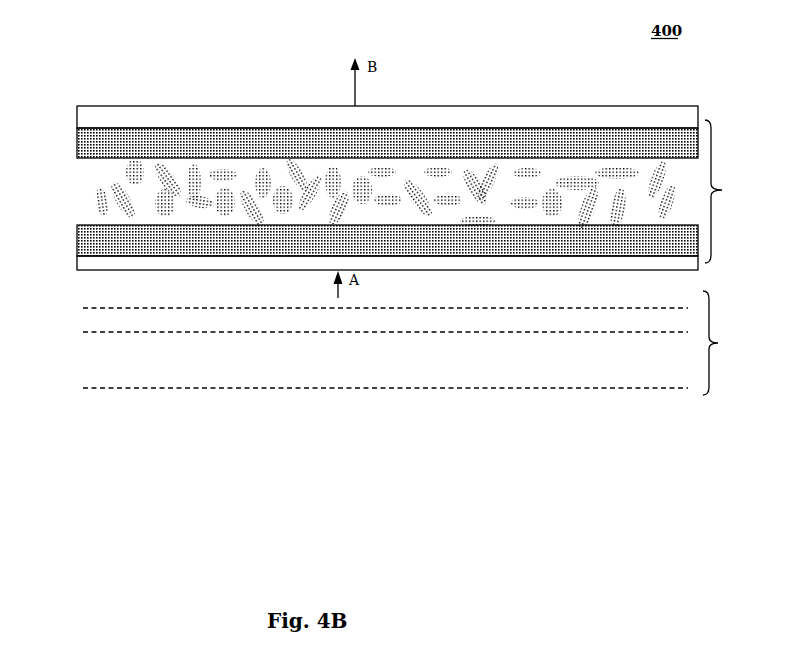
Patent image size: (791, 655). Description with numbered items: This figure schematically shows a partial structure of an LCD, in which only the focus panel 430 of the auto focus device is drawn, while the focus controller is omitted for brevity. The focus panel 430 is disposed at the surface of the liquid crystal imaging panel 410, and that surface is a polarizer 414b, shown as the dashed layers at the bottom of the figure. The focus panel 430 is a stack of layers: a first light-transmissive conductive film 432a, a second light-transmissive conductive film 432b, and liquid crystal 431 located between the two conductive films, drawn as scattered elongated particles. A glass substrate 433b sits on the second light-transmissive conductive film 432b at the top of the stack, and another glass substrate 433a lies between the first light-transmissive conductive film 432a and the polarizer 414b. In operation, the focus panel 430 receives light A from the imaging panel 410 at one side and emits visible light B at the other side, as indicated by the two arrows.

The liquid crystal imaging panel 410 is at (416, 343).
The polarizer 414b is at (359, 313).
The focus panel 430 is at (729, 191).
The liquid crystal 431 is at (354, 193).
The first light-transmissive conductive film 432a is at (364, 240).
The second light-transmissive conductive film 432b is at (364, 143).
The glass substrate 433a is at (364, 268).
The glass substrate 433b is at (364, 117).